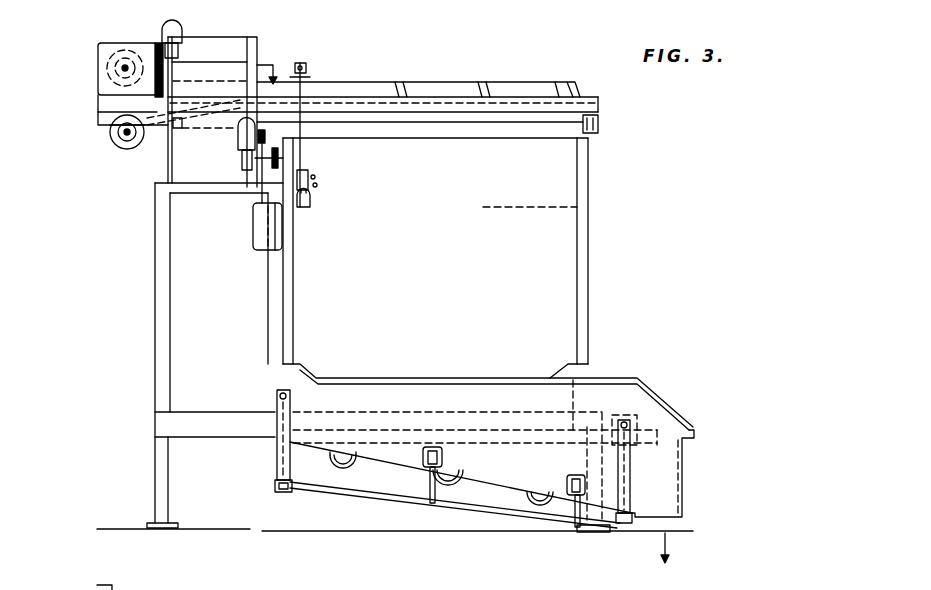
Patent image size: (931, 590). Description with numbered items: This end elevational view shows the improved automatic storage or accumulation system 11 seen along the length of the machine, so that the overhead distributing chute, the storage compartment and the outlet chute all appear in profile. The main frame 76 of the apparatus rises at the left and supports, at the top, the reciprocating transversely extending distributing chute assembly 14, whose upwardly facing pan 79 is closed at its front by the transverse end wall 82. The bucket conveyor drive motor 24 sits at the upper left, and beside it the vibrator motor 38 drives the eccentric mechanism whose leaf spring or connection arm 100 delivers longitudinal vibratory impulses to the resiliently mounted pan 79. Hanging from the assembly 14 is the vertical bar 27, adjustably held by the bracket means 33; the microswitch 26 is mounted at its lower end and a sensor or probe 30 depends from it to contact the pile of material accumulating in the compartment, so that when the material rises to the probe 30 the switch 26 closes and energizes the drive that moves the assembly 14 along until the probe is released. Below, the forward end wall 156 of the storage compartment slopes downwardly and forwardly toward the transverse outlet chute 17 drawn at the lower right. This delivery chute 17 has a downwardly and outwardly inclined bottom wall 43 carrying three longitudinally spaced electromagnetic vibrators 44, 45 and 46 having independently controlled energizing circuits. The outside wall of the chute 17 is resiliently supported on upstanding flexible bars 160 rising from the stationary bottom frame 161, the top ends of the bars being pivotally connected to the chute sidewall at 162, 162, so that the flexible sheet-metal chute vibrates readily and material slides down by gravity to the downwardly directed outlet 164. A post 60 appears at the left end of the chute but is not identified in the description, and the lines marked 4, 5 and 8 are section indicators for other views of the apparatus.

The section line 5- 5 is at (72, 90).
The vibrator motor 38 is at (121, 44).
The drive motor 24 is at (183, 32).
The leaf spring 100 is at (186, 133).
The distributing chute assembly 14 is at (581, 78).
The pan 79 is at (505, 75).
The front transverse end wall 82 is at (589, 93).
The vertical bar 27 is at (302, 164).
The bracket means 33 is at (304, 68).
The microswitch 26 is at (317, 182).
The sensor 30 is at (312, 218).
The section line 4- 4 is at (350, 217).
The main frame 76 is at (154, 352).
The forward end wall 156 is at (505, 251).
The automatic storage or accumulation system 11 is at (82, 311).
The delivery chute 17 is at (504, 380).
The section line 8- 8 is at (433, 375).
The left post 60 is at (278, 460).
The pivotal connections 162 is at (280, 396).
The resilient bars 160 is at (631, 476).
The stationary bottom frame 161 is at (362, 503).
The bottom wall 43 is at (351, 459).
The electromagnetic vibrator 44 is at (340, 470).
The electromagnetic vibrator 45 is at (460, 477).
The electromagnetic vibrator 46 is at (537, 502).
The outlet 164 is at (652, 518).